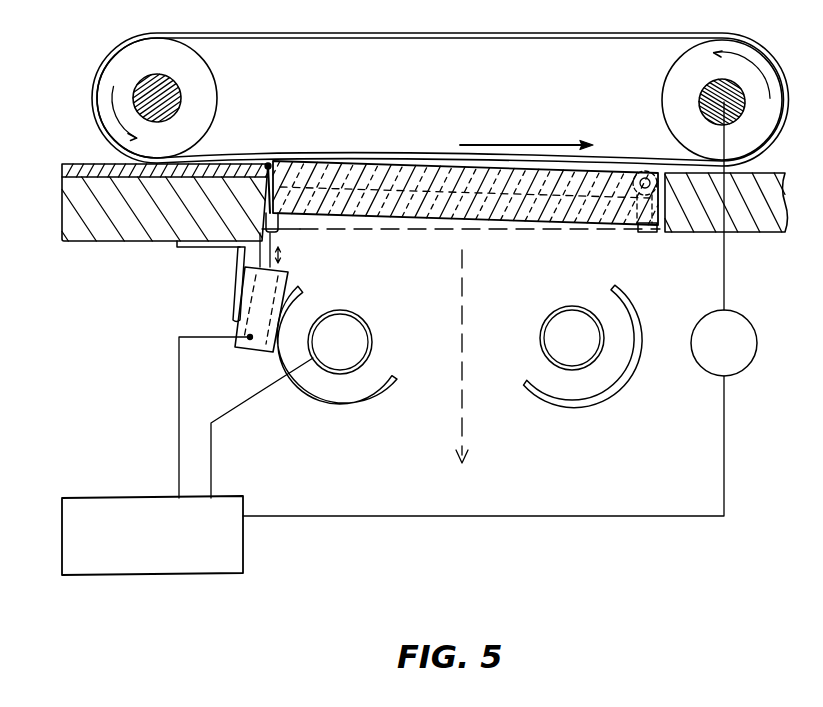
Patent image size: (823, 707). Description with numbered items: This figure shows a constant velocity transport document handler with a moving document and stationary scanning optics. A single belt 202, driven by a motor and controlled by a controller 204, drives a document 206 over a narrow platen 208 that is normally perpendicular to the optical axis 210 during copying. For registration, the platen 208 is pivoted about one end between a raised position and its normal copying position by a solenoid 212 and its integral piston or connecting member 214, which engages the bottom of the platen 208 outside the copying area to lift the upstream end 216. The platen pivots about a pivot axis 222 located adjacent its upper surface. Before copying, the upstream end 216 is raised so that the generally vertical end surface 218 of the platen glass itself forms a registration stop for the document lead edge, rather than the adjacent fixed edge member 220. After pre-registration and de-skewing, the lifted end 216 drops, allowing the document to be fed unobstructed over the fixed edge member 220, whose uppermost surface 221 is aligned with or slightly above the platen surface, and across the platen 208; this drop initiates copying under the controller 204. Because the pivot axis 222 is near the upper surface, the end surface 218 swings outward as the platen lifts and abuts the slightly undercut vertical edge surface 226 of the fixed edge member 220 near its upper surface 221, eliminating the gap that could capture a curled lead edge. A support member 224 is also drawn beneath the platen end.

The belt 202 is at (396, 156).
The controller 204 is at (113, 497).
The document 206 is at (92, 171).
The platen 208 is at (428, 200).
The optical axis 210 is at (462, 310).
The solenoid 212 is at (260, 343).
The connecting member 214 is at (281, 223).
The upstream end of platen 216 is at (303, 163).
The end surface 218 is at (267, 163).
The fixed edge member 220 is at (223, 217).
The uppermost surface 221 is at (185, 186).
The pivot axis 222 is at (647, 174).
The support member 224 is at (628, 210).
The edge surface 226 is at (240, 240).